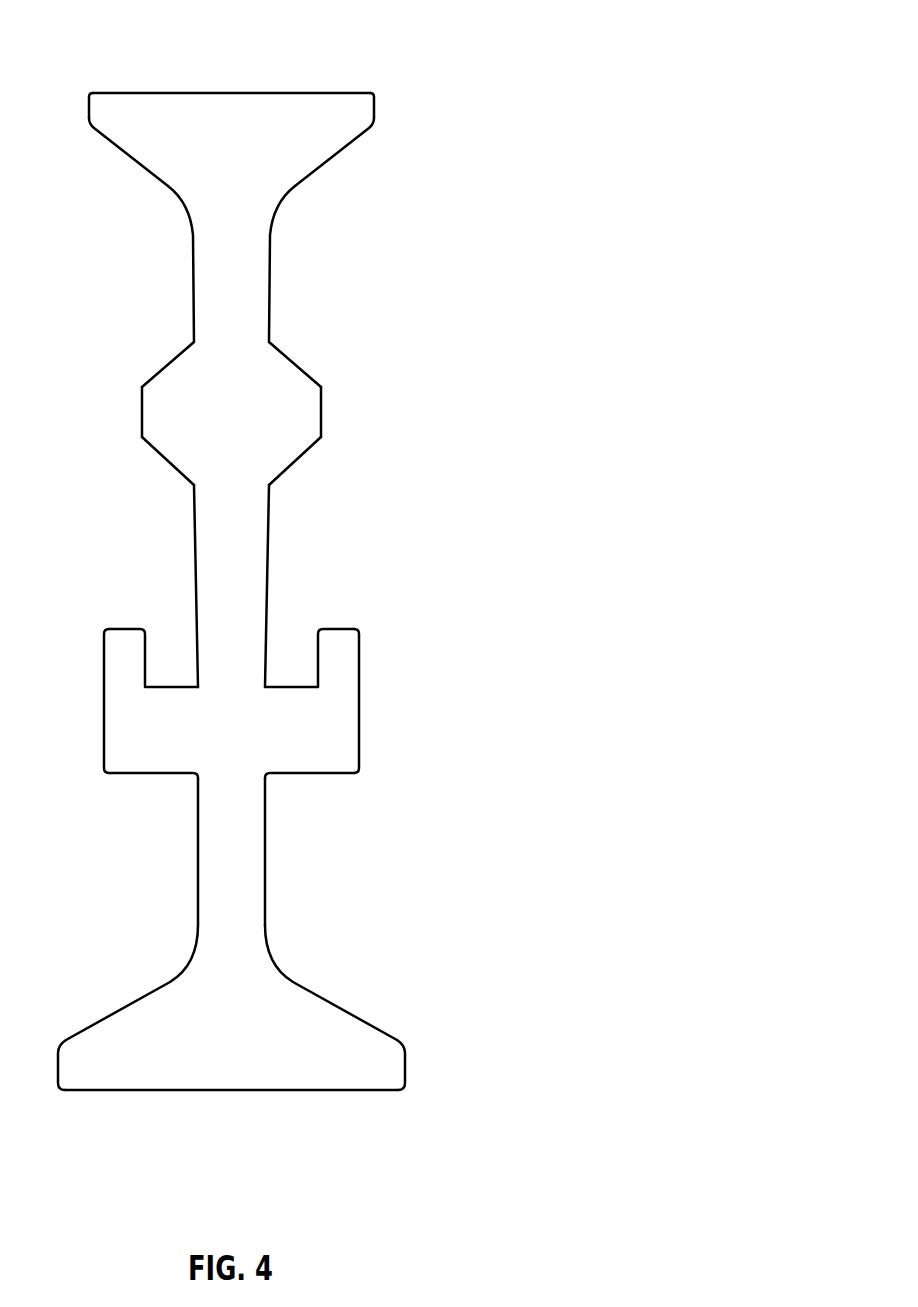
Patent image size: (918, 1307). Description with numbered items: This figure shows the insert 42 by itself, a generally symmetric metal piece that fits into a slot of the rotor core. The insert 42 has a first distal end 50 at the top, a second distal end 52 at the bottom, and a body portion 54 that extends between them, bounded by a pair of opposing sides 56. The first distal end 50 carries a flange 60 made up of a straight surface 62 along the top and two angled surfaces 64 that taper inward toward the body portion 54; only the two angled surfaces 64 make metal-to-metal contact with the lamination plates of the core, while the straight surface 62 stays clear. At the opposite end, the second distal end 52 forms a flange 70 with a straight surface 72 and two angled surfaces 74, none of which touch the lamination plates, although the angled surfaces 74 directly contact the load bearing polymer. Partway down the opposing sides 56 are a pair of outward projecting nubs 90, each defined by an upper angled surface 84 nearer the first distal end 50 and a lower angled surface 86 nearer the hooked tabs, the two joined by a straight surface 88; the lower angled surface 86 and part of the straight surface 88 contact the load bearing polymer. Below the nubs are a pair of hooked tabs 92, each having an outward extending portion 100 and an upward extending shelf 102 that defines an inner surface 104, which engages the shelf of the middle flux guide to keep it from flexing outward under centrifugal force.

The insert 42 is at (556, 26).
The first distal end 50 is at (244, 103).
The second distal end 52 is at (247, 1070).
The body portion 54 is at (275, 540).
The opposing sides 56 is at (192, 252).
The flange 60 is at (352, 85).
The straight surface 62 is at (143, 93).
The angled surfaces 64 is at (125, 153).
The flange 70 is at (413, 1058).
The straight surface 72 is at (330, 1092).
The angled surfaces 74 is at (128, 1005).
The upper angled surface 84 is at (172, 356).
The lower angled surface 86 is at (169, 463).
The straight surface 88 is at (141, 412).
The outward projecting nubs 90 is at (90, 370).
The hooked tabs 92 is at (90, 617).
The outward extending portion 100 is at (148, 762).
The upward extending shelf 102 is at (118, 688).
The inner surface 104 is at (149, 648).